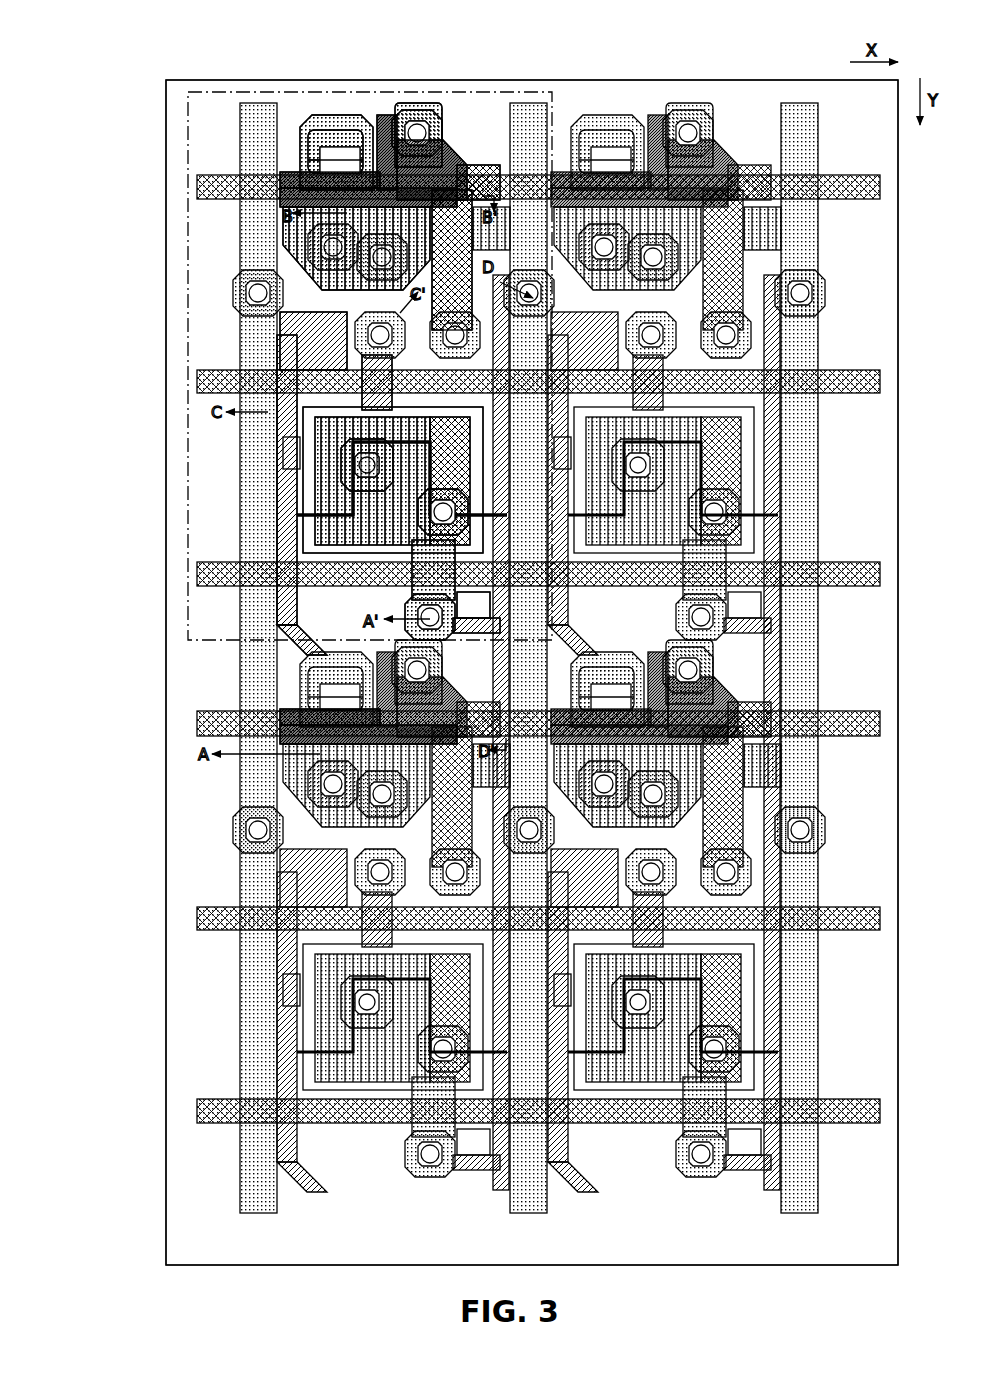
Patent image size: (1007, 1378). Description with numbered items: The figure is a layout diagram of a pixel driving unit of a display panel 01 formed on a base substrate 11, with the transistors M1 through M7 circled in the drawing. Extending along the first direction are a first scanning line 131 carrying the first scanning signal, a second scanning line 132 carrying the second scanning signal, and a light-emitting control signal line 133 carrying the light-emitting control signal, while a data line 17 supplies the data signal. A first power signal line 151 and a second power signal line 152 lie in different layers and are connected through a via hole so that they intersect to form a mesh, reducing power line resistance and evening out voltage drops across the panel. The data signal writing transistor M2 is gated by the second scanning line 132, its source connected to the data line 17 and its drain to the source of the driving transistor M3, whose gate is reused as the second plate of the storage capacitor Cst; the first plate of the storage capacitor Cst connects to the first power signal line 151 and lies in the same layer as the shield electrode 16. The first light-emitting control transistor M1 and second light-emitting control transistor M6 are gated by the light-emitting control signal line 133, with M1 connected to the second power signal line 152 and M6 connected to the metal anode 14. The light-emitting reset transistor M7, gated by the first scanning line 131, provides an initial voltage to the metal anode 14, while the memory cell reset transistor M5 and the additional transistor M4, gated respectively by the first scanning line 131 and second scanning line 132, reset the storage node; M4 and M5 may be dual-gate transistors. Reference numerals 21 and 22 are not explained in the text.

The display panel 01 is at (164, 48).
The base substrate 11 is at (166, 90).
The first scanning line 131 is at (197, 190).
The second scanning line 132 is at (197, 383).
The light-emitting control signal line 133 is at (197, 575).
The data line 17 is at (260, 103).
The metal anode 14 is at (340, 115).
The gate electrode 21 is at (382, 125).
The shield electrode 16 is at (402, 104).
The first power signal line 151 is at (445, 135).
The second power signal line 152 is at (285, 250).
The light shielding layer 22 is at (283, 210).
The first light-emitting control transistor M1 is at (425, 600).
The data signal writing transistor M2 is at (482, 383).
The driving transistor M3 is at (320, 462).
The additional transistor M4 is at (280, 350).
The memory cell reset transistor M5 is at (492, 180).
The second light-emitting control transistor M6 is at (278, 556).
The light-emitting reset transistor M7 is at (342, 745).
The storage capacitor Cst is at (305, 500).